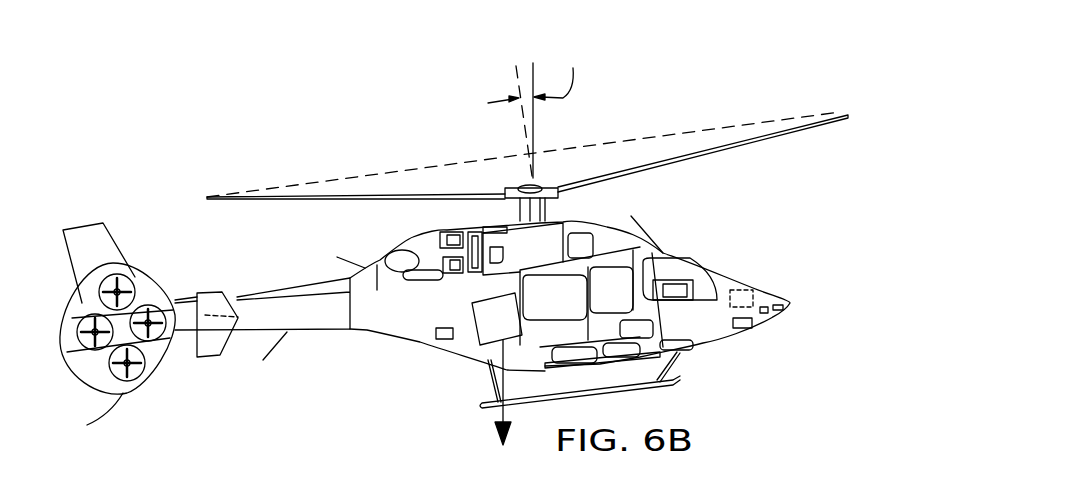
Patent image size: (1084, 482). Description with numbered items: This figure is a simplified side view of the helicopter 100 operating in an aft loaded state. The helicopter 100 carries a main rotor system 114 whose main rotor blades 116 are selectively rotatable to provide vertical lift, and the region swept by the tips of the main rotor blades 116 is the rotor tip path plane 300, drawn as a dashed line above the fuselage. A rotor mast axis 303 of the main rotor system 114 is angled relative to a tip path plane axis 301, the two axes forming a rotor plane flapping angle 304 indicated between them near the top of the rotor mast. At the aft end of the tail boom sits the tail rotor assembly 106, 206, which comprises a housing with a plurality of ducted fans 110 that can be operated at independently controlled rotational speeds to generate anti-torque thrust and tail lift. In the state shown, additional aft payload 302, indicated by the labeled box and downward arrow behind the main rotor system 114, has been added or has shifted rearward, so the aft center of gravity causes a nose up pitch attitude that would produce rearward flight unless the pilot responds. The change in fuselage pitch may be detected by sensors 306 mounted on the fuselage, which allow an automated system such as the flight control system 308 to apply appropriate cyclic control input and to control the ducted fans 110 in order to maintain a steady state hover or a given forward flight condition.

The helicopter 100 is at (640, 68).
The tail rotor assembly 106 is at (145, 281).
The tail rotor assembly 206 is at (145, 281).
The ducted fans 110 is at (138, 298).
The main rotor system 114 is at (520, 183).
The main rotor blades 116 is at (333, 193).
The rotor tip path plane 300 is at (657, 138).
The tip path plane axis 301 is at (516, 73).
The payload 302 is at (472, 310).
The rotor mast axis 303 is at (535, 122).
The rotor plane flapping angle 304 is at (539, 73).
The sensors 306 is at (447, 340).
The flight control system 308 is at (740, 290).